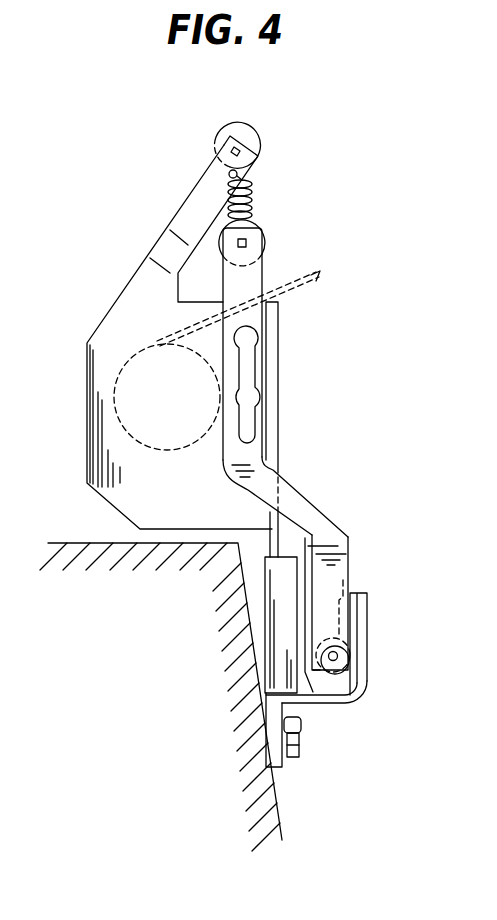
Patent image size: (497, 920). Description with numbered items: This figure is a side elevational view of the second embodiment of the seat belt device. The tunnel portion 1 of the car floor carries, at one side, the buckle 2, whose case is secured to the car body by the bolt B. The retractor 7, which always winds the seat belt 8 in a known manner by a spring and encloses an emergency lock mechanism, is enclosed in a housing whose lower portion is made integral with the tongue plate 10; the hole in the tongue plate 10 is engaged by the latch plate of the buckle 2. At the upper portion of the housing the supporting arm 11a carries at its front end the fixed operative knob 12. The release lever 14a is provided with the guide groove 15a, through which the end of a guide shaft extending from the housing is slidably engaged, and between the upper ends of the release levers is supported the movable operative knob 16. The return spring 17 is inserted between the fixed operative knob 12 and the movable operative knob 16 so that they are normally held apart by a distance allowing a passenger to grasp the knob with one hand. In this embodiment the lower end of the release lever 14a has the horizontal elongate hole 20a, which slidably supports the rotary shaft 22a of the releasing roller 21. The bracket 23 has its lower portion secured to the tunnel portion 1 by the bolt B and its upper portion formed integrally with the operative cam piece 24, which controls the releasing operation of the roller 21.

The tunnel portion of a car floor 1 is at (283, 825).
The buckle 2 is at (270, 668).
The retractor 7 is at (120, 418).
The seat belt 8 is at (321, 278).
The tongue plate 10 is at (282, 540).
The supporting arm 11a is at (190, 188).
The fixed operative knob 12 is at (257, 135).
The release lever 14a is at (258, 457).
The guide groove 15a is at (252, 369).
The movable operative knob 16 is at (265, 219).
The return spring 17 is at (260, 187).
The horizontal elongate hole 20a is at (313, 674).
The releasing roller 21 is at (368, 688).
The rotary shaft 22a is at (353, 660).
The bracket 23 is at (368, 617).
The operative cam piece 24 is at (350, 590).
The bolt B is at (300, 752).